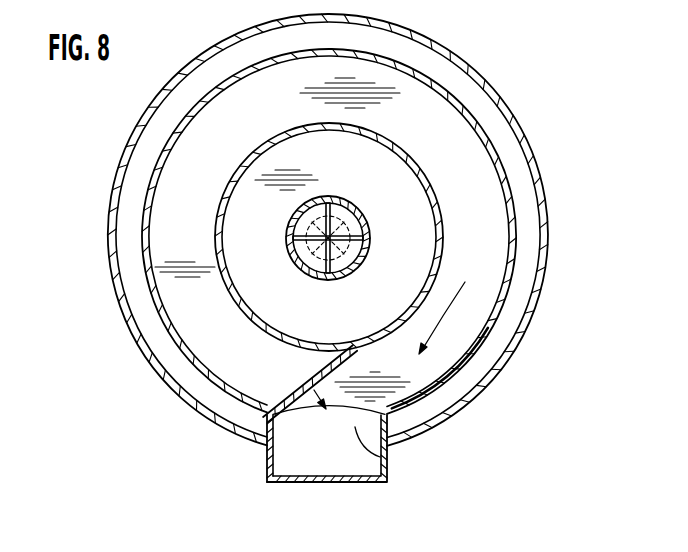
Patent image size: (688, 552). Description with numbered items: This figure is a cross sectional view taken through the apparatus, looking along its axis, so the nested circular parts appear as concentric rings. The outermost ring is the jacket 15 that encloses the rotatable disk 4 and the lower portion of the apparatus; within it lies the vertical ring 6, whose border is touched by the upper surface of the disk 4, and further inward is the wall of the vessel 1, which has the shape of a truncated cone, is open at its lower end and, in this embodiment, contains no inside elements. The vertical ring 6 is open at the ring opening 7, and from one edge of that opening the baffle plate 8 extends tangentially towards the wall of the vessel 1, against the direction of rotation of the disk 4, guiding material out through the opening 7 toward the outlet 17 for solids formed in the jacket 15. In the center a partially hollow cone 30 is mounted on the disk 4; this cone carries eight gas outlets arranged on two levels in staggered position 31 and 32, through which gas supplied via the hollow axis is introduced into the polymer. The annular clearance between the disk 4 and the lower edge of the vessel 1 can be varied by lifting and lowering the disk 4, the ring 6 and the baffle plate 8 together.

The vessel 1 is at (390, 140).
The rotatable disk 4 is at (455, 157).
The vertical ring 6 is at (512, 197).
The ring opening 7 is at (387, 458).
The baffle plate 8 is at (300, 405).
The jacket 15 is at (525, 331).
The outlet for solids 17 is at (266, 466).
The partially hollow cone 30 is at (288, 247).
The gas outlets on first level 31 is at (370, 238).
The gas outlets on second level 32 is at (342, 226).